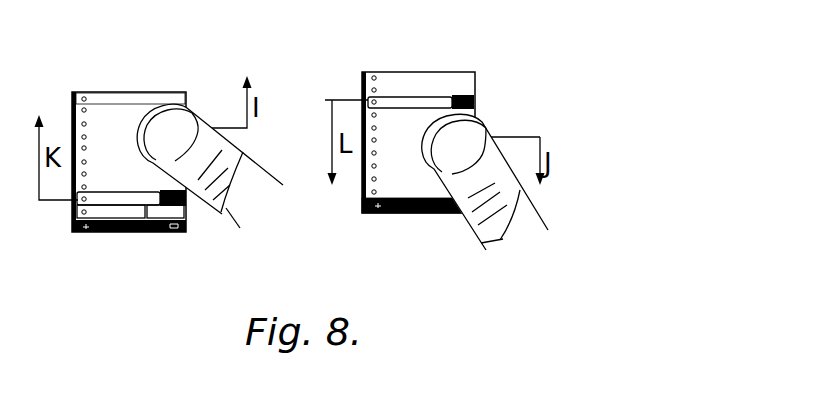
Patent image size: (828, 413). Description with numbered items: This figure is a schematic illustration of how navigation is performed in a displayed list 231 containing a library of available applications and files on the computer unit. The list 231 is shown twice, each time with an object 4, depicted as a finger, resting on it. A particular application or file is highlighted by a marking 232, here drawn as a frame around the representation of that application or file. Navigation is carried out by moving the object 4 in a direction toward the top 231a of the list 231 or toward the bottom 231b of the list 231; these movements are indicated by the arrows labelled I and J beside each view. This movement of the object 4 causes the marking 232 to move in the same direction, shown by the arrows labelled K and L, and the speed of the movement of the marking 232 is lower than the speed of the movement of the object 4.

The list 231 is at (107, 97).
The top of the list 231a is at (185, 98).
The bottom of the list 231b is at (362, 197).
The marking 232 is at (150, 233).
The object 4 is at (222, 214).